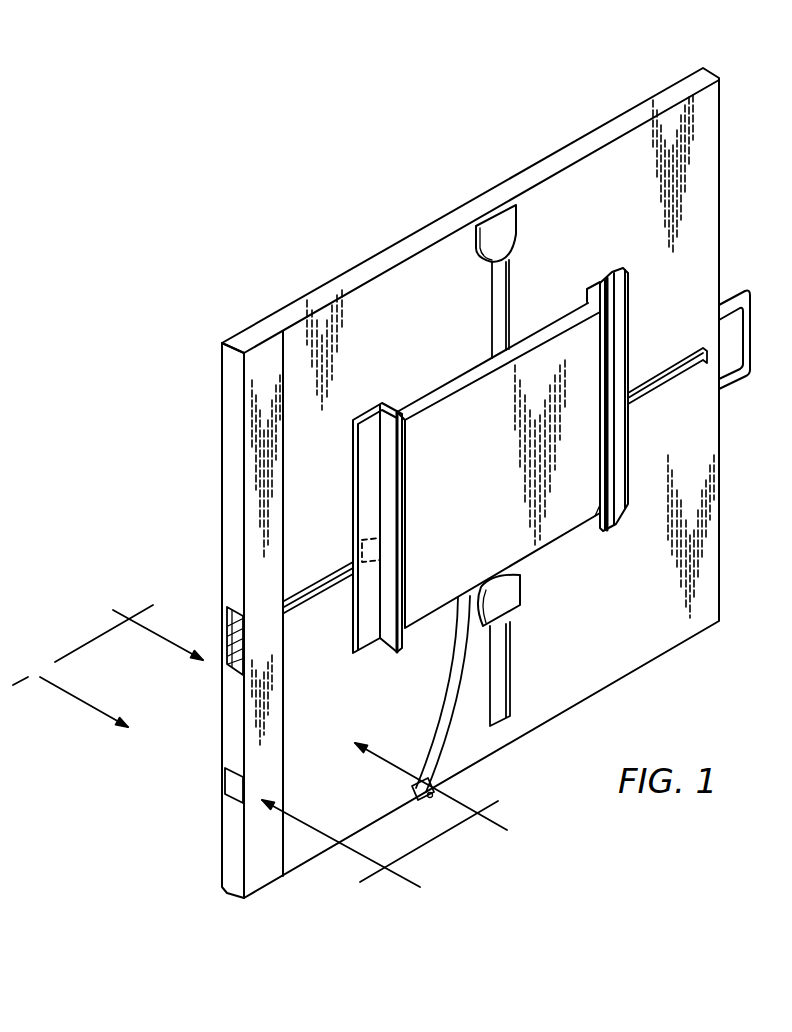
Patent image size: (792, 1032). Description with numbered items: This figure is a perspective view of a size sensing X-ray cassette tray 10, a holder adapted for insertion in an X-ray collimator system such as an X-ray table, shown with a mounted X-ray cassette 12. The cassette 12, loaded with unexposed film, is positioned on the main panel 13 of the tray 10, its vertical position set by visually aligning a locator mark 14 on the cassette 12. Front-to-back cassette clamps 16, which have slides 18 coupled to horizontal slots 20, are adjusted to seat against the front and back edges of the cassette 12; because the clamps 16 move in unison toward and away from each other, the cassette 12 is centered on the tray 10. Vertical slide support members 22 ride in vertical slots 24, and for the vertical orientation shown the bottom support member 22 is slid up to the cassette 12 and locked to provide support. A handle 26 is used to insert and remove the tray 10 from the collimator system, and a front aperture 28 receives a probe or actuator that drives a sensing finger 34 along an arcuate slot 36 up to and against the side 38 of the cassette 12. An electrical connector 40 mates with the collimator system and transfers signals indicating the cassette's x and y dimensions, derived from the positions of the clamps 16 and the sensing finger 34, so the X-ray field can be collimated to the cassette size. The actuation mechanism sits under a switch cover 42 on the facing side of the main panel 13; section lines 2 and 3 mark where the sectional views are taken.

The X-ray cassette tray 10 is at (357, 247).
The X-ray cassette 12 is at (553, 330).
The main panel 13 is at (710, 138).
The locator mark 14 is at (407, 526).
The front-to-back cassette clamps 16 is at (360, 414).
The slides 18 is at (375, 537).
The horizontal slots 20 is at (300, 597).
The vertical slide support members 22 is at (477, 232).
The vertical slots 24 is at (491, 299).
The handle 26 is at (752, 292).
The front aperture 28 is at (232, 797).
The sensing finger 34 is at (431, 797).
The arcuate slot 36 is at (448, 697).
The side 38 is at (568, 542).
The electrical connector 40 is at (227, 634).
The switch cover 42 is at (286, 733).
The section line 2— 2 is at (393, 823).
The section line 3— 3 is at (103, 660).